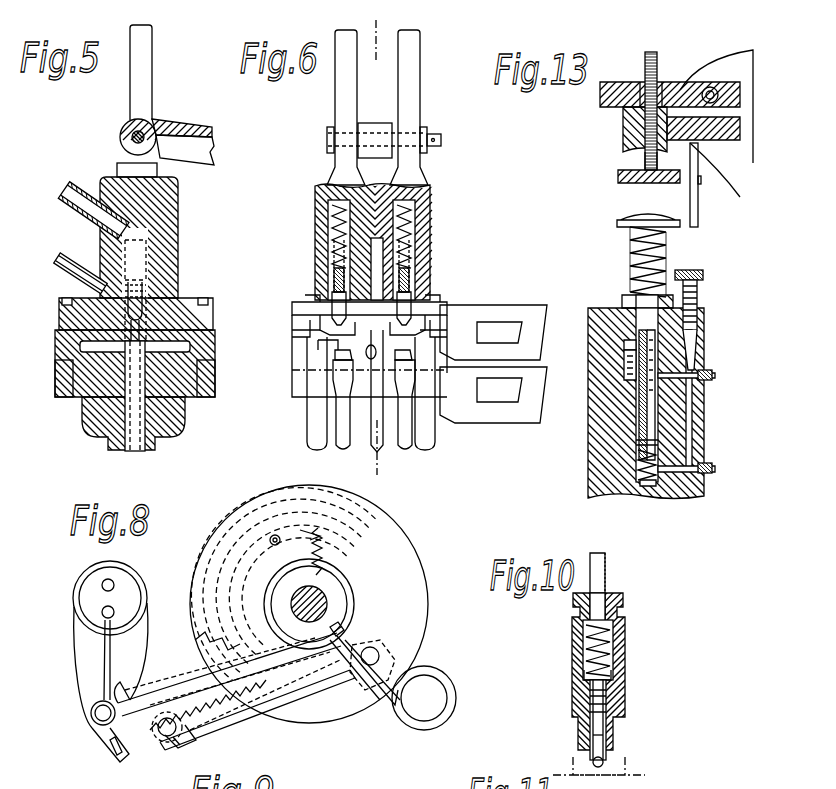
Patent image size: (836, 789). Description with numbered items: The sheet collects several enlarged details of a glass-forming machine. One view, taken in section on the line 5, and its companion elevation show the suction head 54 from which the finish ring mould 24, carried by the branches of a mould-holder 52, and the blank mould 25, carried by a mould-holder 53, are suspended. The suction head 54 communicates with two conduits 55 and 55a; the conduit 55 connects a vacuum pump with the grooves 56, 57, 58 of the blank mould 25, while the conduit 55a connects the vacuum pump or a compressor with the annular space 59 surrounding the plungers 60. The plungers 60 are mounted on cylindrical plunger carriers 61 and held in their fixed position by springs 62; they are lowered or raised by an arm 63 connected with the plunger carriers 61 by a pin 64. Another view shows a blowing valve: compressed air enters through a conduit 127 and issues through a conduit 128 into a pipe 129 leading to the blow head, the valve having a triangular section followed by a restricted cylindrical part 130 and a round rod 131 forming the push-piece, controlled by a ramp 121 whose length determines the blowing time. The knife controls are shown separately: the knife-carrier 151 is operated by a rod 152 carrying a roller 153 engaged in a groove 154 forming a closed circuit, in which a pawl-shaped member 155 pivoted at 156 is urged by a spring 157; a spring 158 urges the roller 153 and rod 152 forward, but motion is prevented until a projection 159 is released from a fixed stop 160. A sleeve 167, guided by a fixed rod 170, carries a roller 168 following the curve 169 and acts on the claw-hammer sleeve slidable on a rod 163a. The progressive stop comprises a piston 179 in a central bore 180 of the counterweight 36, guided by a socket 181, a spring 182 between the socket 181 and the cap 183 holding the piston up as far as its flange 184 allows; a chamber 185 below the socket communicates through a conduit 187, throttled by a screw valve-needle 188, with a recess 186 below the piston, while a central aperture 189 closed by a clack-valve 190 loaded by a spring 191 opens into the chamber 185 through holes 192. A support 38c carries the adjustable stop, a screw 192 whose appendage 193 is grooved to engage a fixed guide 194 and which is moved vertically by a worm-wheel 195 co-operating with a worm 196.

In FIG. 5, the pin 64 is at (166, 123).
In FIG. 6, the pin 64 is at (441, 139).
In FIG. 5, the arm 63 is at (208, 105).
In FIG. 6, the arm 63 is at (390, 120).
In FIG. 5, the conduit 55 is at (72, 205).
In FIG. 5, the conduit 55a is at (62, 265).
In FIG. 5, the suction head 54 is at (180, 262).
In FIG. 6, the suction head 54 is at (425, 270).
In FIG. 5, the plungers 60 is at (150, 300).
In FIG. 6, the plungers 60 is at (385, 314).
In FIG. 5, the finish ring mould 24 is at (200, 320).
In FIG. 6, the finish ring mould 24 is at (400, 330).
In FIG. 5, the mould-holder 52 is at (214, 322).
In FIG. 6, the mould-holder 52 is at (466, 336).
In FIG. 5, the mould-holder 53 is at (216, 388).
In FIG. 6, the mould-holder 53 is at (460, 402).
In FIG. 5, the blank mould 25 is at (170, 408).
In FIG. 6, the blank mould 25 is at (325, 376).
In FIG. 6, the section line 5— 5 is at (380, 247).
In FIG. 8, the section line 5— 5 is at (330, 590).
In FIG. 6, the plunger carriers 61 is at (392, 96).
In FIG. 6, the springs 62 is at (412, 224).
In FIG. 6, the annular space 59 is at (300, 304).
In FIG. 6, the groove 56 is at (312, 432).
In FIG. 6, the groove 57 is at (360, 427).
In FIG. 6, the groove 58 is at (430, 447).
In FIG. 13, the screw 192 is at (657, 60).
In FIG. 13, the lever 38c is at (735, 70).
In FIG. 13, the worm 196 is at (718, 97).
In FIG. 13, the worm-wheel 195 is at (610, 107).
In FIG. 13, the appendage 193 is at (667, 183).
In FIG. 13, the fixed guide 194 is at (698, 216).
In FIG. 13, the cap 183 is at (640, 212).
In FIG. 13, the spring 182 is at (669, 262).
In FIG. 13, the socket 181 is at (627, 298).
In FIG. 13, the screw valve-needle 188 is at (695, 300).
In FIG. 13, the flange 184 is at (630, 340).
In FIG. 13, the chamber 185 is at (628, 362).
In FIG. 13, the central bore 180 is at (640, 388).
In FIG. 13, the piston 179 is at (662, 410).
In FIG. 13, the conduit 187 is at (692, 422).
In FIG. 13, the central aperture 189 is at (636, 433).
In FIG. 13, the clack-valve 190 is at (662, 440).
In FIG. 13, the counterweight 36 is at (600, 468).
In FIG. 13, the recess 186 is at (640, 462).
In FIG. 13, the spring 191 is at (647, 486).
In FIG. 8, the pivot 156 is at (275, 535).
In FIG. 8, the pawl-shaped member 155 is at (303, 528).
In FIG. 8, the spring 157 is at (325, 552).
In FIG. 8, the groove 154 is at (200, 594).
In FIG. 8, the curve 169 is at (196, 636).
In FIG. 8, the knife-carrier 151 is at (160, 668).
In FIG. 8, the spring 158 is at (208, 705).
In FIG. 8, the rod 163a is at (198, 745).
In FIG. 8, the rod 152 is at (145, 745).
In FIG. 8, the sleeve 167 is at (240, 722).
In FIG. 8, the roller 168 is at (262, 698).
In FIG. 8, the fixed rod 170 is at (290, 666).
In FIG. 8, the roller 153 is at (330, 706).
In FIG. 8, the projection 159 is at (348, 628).
In FIG. 8, the fixed stop 160 is at (382, 642).
In FIG. 10, the conduit 127 is at (600, 585).
In FIG. 10, the pipe 129 is at (590, 692).
In FIG. 10, the conduit 128 is at (600, 706).
In FIG. 10, the restricted cylindrical part 130 is at (590, 710).
In FIG. 10, the round rod 131 is at (604, 737).
In FIG. 10, the ramp 121 is at (615, 767).